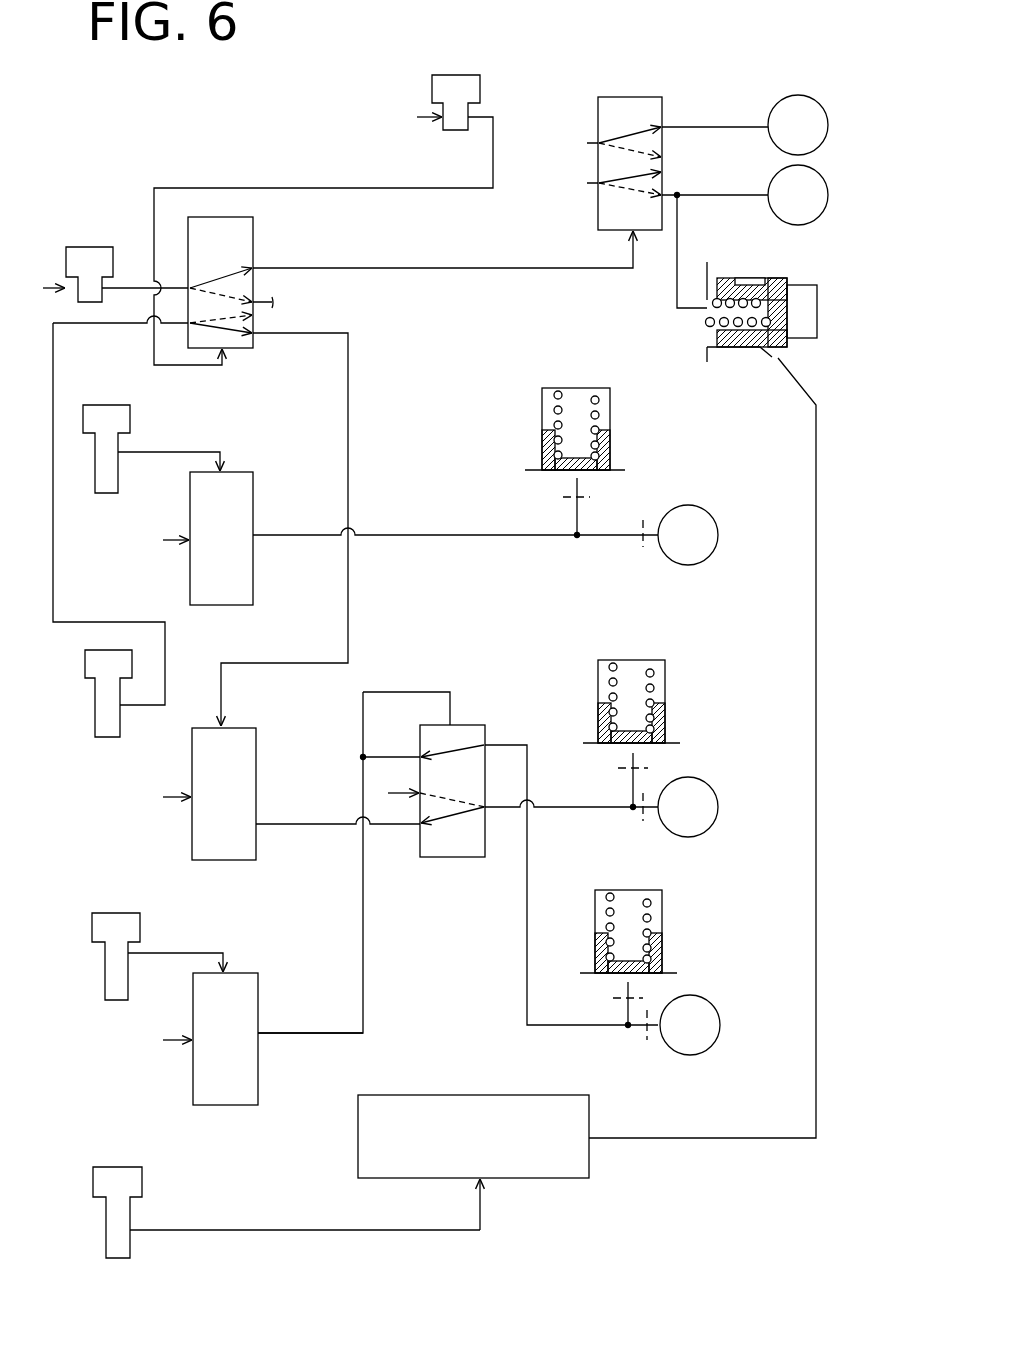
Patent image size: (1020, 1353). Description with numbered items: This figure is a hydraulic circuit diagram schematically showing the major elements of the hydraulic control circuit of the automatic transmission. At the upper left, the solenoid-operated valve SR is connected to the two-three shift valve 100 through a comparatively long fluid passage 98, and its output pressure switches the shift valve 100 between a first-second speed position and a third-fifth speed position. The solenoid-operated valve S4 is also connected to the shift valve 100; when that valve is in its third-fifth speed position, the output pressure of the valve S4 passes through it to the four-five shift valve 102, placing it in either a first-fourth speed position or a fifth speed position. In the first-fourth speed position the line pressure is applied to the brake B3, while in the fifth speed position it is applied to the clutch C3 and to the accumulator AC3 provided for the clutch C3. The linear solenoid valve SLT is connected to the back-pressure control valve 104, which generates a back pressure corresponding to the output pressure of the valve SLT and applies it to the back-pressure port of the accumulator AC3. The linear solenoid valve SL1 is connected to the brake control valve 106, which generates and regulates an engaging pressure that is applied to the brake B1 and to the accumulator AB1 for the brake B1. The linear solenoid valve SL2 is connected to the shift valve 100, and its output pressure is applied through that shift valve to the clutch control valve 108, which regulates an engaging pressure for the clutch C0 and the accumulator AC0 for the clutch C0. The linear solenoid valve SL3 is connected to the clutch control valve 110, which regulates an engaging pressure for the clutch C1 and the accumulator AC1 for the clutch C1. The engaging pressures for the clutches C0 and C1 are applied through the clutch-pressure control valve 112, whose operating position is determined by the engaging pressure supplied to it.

The fluid passage 98 is at (357, 186).
The 2-3 shift valve 100 is at (238, 233).
The 4-5 shift valve 102 is at (618, 108).
The back-pressure control valve 104 is at (582, 1123).
The B1 control valve 106 is at (245, 488).
The C0 control valve 108 is at (247, 750).
The C1 control valve 110 is at (247, 1000).
The clutch-pressure control valve 112 is at (432, 847).
The solenoid-operated valve S4 is at (88, 257).
The solenoid-operated valve SR is at (452, 82).
The linear solenoid valve SL1 is at (123, 415).
The linear solenoid valve SL2 is at (90, 665).
The linear solenoid valve SL3 is at (132, 925).
The linear solenoid valve SLT is at (133, 1182).
The brake B3 is at (798, 125).
The clutch C3 is at (798, 195).
The accumulator AC3 is at (822, 296).
The accumulator AB1 is at (610, 413).
The brake B1 is at (485, 535).
The accumulator AC0 is at (665, 678).
The clutch C0 is at (680, 807).
The accumulator AC1 is at (662, 908).
The clutch C1 is at (683, 1025).